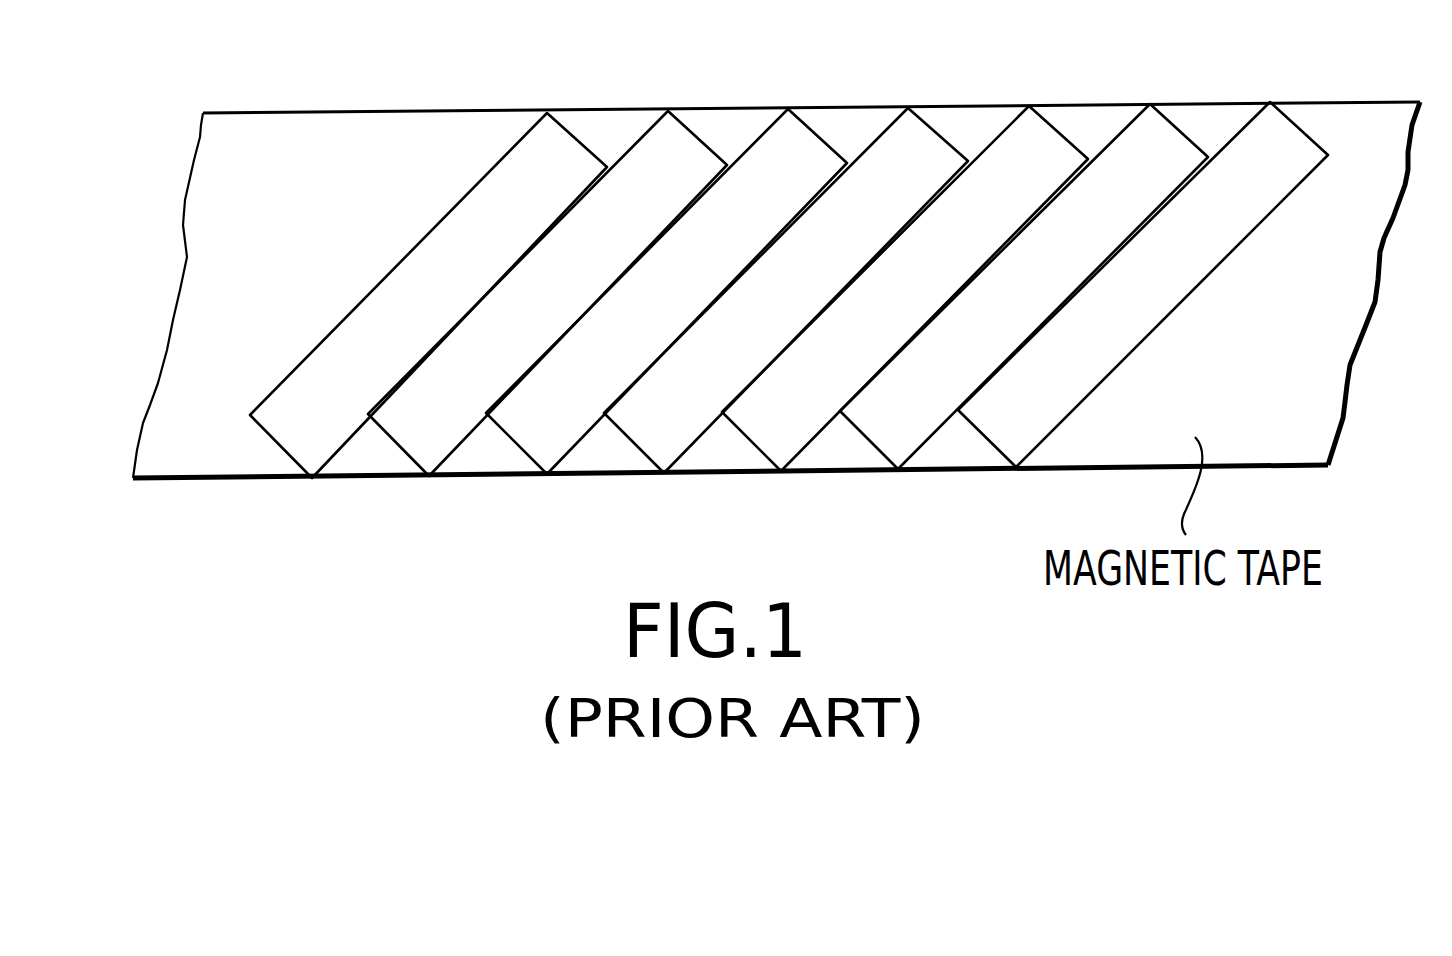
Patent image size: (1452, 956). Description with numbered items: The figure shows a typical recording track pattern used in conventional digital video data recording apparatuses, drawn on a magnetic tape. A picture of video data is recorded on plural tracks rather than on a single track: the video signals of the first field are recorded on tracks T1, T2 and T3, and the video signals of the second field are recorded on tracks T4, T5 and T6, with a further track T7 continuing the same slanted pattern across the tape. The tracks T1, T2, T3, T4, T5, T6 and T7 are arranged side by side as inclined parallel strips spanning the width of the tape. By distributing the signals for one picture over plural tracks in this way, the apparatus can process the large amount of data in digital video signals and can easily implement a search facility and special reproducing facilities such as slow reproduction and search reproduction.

The track T1 is at (428, 295).
The track T2 is at (547, 293).
The track T3 is at (666, 291).
The track T4 is at (786, 290).
The track T5 is at (905, 288).
The track T6 is at (1024, 286).
The track T7 is at (1143, 284).